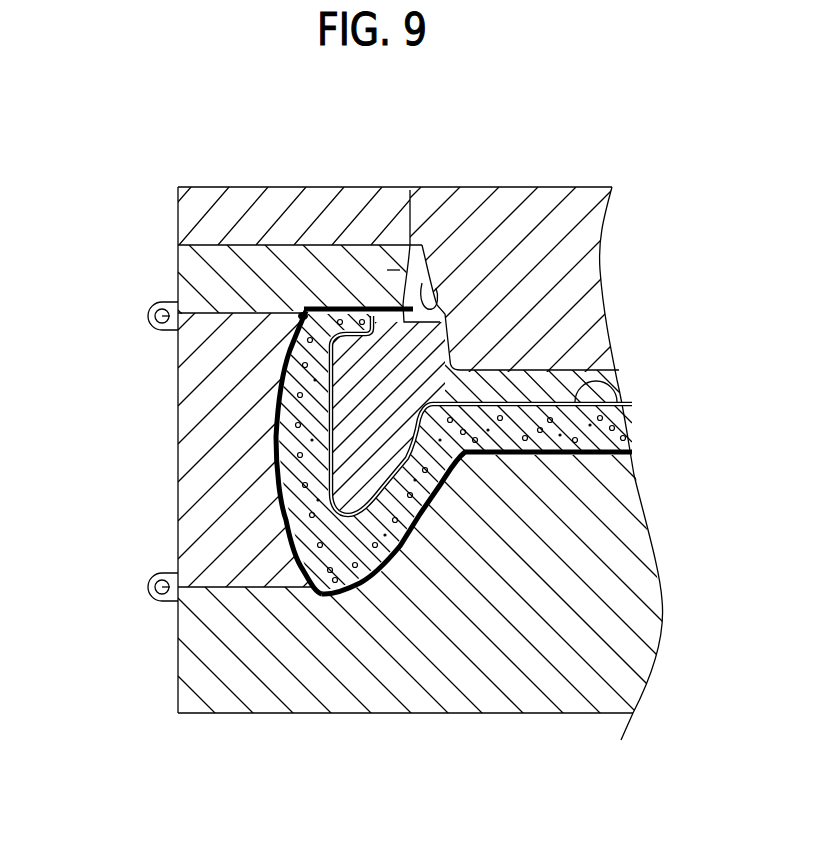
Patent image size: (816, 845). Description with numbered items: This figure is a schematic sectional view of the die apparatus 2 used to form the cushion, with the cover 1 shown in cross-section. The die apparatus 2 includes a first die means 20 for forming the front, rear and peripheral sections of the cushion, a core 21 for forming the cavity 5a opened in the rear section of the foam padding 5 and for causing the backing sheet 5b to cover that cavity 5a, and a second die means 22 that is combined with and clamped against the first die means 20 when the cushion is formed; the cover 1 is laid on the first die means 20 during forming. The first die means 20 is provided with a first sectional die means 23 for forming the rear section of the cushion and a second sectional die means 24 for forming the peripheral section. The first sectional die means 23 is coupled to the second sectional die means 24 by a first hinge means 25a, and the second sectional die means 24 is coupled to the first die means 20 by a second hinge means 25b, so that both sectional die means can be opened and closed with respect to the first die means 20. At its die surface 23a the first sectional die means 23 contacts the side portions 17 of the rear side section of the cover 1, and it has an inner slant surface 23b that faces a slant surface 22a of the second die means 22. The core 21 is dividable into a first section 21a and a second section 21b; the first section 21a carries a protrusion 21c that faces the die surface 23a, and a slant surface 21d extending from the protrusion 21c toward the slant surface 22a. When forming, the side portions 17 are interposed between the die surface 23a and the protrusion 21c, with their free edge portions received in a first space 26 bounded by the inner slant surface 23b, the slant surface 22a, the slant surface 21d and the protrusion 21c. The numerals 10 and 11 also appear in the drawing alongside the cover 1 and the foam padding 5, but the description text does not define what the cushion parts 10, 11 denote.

The cover 1 is at (560, 466).
The die apparatus 2 is at (228, 168).
The foam padding 5 is at (603, 422).
The cavity 5a is at (397, 465).
The backing sheet 5b is at (628, 385).
The laminated panel 10 is at (593, 457).
The outer wall portion 11 is at (283, 412).
The side portions 17 is at (330, 306).
The first die means 20 is at (470, 622).
The core 21 is at (620, 371).
The first section 21a is at (280, 372).
The second section 21b is at (500, 370).
The protrusion 21c is at (455, 322).
The slant surface 21d is at (440, 337).
The second die means 22 is at (550, 183).
The slant surface 22a is at (440, 330).
The first sectional die means 23 is at (170, 255).
The die surface 23a is at (347, 305).
The inner slant surface 23b is at (410, 190).
The second sectional die means 24 is at (170, 492).
The first hinge means 25a is at (148, 316).
The second hinge means 25b is at (148, 587).
The first space 26 is at (423, 257).